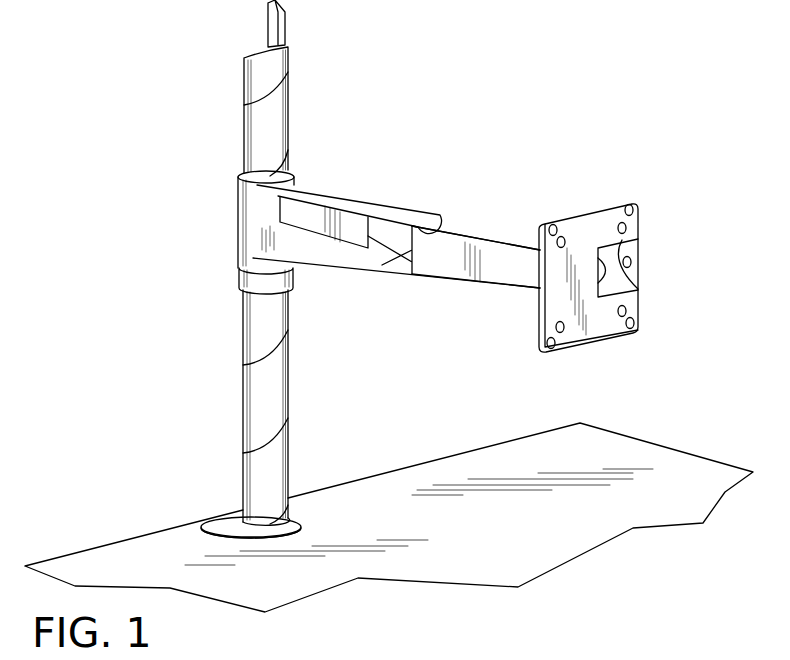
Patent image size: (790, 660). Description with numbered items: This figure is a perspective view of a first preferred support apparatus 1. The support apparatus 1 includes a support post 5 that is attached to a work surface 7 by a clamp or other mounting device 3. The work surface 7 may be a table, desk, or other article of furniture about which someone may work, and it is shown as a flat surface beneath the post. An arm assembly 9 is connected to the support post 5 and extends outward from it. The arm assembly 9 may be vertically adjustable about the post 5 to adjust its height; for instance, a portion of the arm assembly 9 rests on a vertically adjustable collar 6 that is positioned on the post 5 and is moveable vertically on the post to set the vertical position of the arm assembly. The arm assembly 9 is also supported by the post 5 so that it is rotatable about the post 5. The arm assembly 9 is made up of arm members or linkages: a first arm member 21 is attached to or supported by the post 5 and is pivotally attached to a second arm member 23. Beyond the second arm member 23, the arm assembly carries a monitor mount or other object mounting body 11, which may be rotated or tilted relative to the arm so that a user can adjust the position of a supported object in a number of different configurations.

The support apparatus 1 is at (431, 269).
The mounting device 3 is at (226, 517).
The support post 5 is at (247, 155).
The vertically adjustable collar 6 is at (242, 281).
The work surface 7 is at (417, 490).
The arm assembly 9 is at (396, 230).
The object mounting body 11 is at (648, 258).
The first arm member 21 is at (322, 258).
The second arm member 23 is at (450, 270).